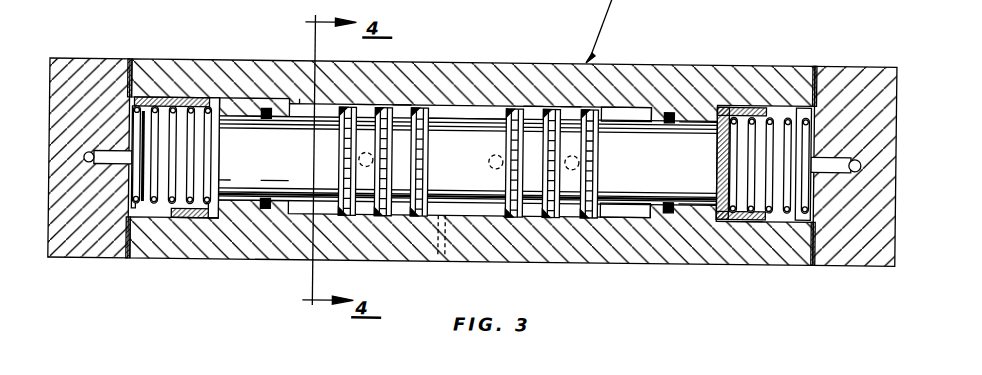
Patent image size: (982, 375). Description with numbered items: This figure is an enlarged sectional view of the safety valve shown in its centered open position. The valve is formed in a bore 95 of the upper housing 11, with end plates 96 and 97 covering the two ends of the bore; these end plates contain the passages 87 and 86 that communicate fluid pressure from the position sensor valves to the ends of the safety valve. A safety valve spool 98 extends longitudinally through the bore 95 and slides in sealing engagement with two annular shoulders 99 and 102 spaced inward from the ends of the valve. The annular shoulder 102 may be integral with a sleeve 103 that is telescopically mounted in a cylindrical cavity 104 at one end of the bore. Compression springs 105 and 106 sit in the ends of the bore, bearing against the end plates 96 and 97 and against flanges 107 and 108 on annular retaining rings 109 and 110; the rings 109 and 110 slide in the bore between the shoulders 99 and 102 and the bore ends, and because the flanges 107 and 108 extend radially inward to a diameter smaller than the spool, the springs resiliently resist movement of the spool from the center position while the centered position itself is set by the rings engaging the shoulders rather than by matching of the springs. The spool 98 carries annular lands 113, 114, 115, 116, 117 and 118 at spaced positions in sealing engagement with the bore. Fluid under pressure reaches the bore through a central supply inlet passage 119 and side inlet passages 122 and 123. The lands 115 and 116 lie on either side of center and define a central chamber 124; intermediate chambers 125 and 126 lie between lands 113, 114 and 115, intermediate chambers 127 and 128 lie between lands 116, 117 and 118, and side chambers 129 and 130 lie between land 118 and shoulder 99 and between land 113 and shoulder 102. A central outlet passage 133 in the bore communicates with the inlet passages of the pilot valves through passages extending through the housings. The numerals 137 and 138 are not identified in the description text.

The upper housing 11 is at (855, 62).
The end plate 96 is at (78, 70).
The end plate 97 is at (862, 146).
The passage 87 is at (92, 150).
The passage 86 is at (858, 151).
The central chamber 124 is at (455, 113).
The safety valve spool 98 is at (494, 112).
The central supply inlet passage 119 is at (495, 150).
The side inlet passage 122 is at (322, 139).
The side inlet passage 123 is at (606, 158).
The flange 108 is at (716, 180).
The flange 107 is at (232, 206).
The annular shoulder 102 is at (249, 108).
The bore 95 is at (669, 106).
The annular shoulder 99 is at (698, 112).
The side chamber 129 is at (617, 101).
The annular land 113 is at (345, 214).
The annular land 114 is at (382, 214).
The annular land 115 is at (420, 214).
The annular land 116 is at (518, 214).
The annular land 117 is at (555, 214).
The annular land 118 is at (592, 214).
The intermediate chamber 126 is at (364, 106).
The intermediate chamber 125 is at (405, 106).
The intermediate chamber 127 is at (534, 106).
The intermediate chamber 128 is at (571, 106).
The central outlet passage 133 is at (447, 214).
The side chamber 130 is at (302, 96).
The cylindrical cavity 104 is at (218, 96).
The spring retainer 137 is at (155, 104).
The compression spring 105 is at (136, 188).
The sleeve 103 is at (183, 102).
The annular retaining ring 109 is at (188, 217).
The compression spring 106 is at (792, 197).
The right spring 138 is at (781, 108).
The annular retaining ring 110 is at (750, 226).